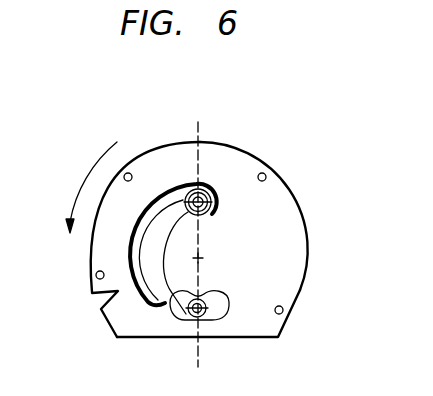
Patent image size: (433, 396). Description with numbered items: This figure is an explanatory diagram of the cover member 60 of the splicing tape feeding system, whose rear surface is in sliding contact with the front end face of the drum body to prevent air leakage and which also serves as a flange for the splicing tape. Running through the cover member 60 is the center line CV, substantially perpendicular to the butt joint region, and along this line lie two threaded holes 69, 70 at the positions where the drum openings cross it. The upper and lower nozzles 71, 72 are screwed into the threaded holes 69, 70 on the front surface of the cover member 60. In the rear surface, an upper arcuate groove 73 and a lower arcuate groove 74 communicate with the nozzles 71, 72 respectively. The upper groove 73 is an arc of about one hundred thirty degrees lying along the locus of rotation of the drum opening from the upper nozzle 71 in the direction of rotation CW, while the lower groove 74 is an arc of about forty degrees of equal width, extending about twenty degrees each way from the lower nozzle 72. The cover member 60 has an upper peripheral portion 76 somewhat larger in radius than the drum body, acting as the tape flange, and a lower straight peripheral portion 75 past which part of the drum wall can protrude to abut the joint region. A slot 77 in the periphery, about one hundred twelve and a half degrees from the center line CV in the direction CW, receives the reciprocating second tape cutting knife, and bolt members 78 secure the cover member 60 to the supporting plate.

The cover member 60 is at (173, 150).
The threaded hole 69 is at (234, 208).
The threaded hole 70 is at (228, 283).
The upper nozzle 71 is at (213, 208).
The lower nozzle 72 is at (204, 292).
The upper arcuate groove 73 is at (141, 226).
The lower arcuate groove 74 is at (222, 313).
The bottom edge 75 is at (154, 338).
The upper peripheral portion 76 is at (293, 186).
The slot 77 is at (100, 300).
The bolt members 78 is at (132, 177).
The direction of rotation CW is at (87, 172).
The center line CV is at (199, 132).